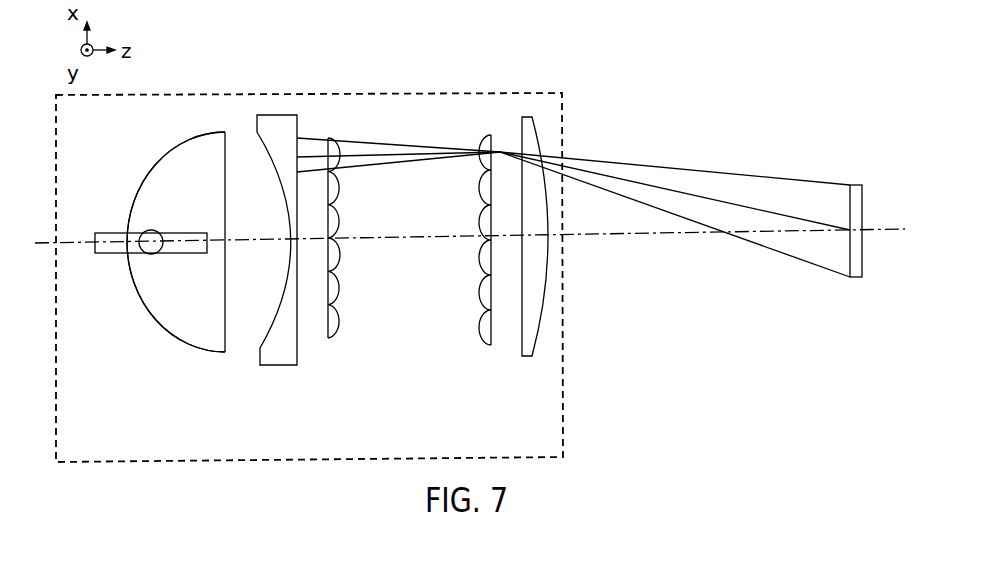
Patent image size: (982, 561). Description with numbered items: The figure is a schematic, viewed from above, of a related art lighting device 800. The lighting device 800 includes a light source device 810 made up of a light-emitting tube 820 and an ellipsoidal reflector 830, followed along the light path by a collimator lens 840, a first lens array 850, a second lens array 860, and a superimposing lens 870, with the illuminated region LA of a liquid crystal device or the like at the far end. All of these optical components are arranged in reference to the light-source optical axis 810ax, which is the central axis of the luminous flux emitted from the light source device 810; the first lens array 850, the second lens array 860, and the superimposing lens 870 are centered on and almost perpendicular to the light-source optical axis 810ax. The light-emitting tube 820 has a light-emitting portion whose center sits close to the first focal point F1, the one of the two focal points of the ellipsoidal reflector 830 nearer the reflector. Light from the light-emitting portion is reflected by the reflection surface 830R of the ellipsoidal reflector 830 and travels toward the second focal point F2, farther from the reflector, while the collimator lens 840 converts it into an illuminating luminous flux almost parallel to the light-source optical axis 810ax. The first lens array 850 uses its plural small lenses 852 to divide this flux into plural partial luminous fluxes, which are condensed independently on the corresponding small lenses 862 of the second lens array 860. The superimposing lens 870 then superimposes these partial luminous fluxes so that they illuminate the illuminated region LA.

The lighting device 800 is at (535, 92).
The light source device 810 is at (165, 286).
The light-source optical axis 810ax is at (76, 238).
The light-emitting tube 820 is at (153, 256).
The ellipsoidal reflector 830 is at (142, 302).
The reflection surface 830R is at (168, 165).
The collimator lens 840 is at (277, 367).
The first lens array 850 is at (365, 280).
The small lenses 852 is at (335, 334).
The second lens array 860 is at (465, 278).
The small lenses 862 is at (486, 336).
The superimposing lens 870 is at (531, 358).
The first focal point F1 is at (151, 254).
The second focal point F2 is at (506, 378).
The illuminated region LA is at (851, 185).